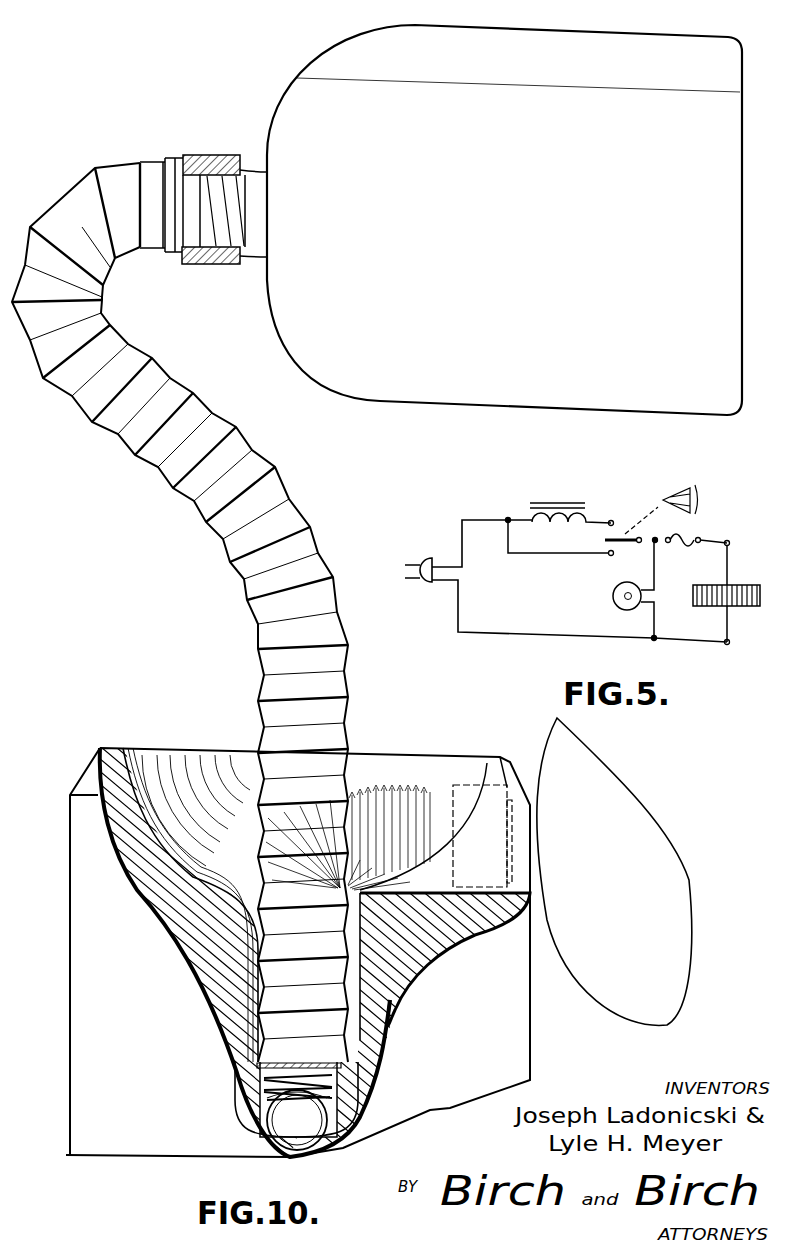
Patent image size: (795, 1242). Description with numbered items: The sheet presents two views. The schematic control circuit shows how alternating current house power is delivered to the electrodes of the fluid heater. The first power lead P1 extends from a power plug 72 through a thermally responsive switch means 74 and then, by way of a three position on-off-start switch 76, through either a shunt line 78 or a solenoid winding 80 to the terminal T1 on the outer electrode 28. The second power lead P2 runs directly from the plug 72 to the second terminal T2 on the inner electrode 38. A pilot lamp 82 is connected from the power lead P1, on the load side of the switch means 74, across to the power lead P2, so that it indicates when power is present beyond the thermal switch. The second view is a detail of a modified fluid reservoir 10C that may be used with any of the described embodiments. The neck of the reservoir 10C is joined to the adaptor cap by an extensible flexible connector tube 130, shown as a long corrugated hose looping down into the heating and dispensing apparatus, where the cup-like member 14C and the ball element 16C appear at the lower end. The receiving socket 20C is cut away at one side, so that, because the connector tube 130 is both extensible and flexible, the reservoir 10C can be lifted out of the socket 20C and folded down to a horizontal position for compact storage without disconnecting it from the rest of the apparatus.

In FIG. 10, the fluid reservoir 10C is at (546, 235).
In FIG. 10, the extensible flexible connector tube 130 is at (349, 651).
In FIG. 10, the receiving socket 20C is at (450, 834).
In FIG. 10, the cup member 14C is at (257, 1103).
In FIG. 10, the bulb 16C is at (314, 1131).
In FIG. 5, the power plug 72 is at (425, 560).
In FIG. 5, the solenoid winding 80 is at (568, 503).
In FIG. 5, the shunt line 78 is at (520, 556).
In FIG. 5, the three position on-off-start switch 76 is at (632, 521).
In FIG. 5, the thermally responsive switch means 74 is at (693, 536).
In FIG. 5, the terminal T1 is at (730, 543).
In FIG. 5, the second terminal T2 is at (727, 645).
In FIG. 5, the outer electrode 28 is at (748, 586).
In FIG. 5, the inner electrode 38 is at (760, 598).
In FIG. 5, the pilot lamp 82 is at (613, 600).
In FIG. 5, the first power lead P1 is at (478, 518).
In FIG. 5, the second power lead P2 is at (528, 637).